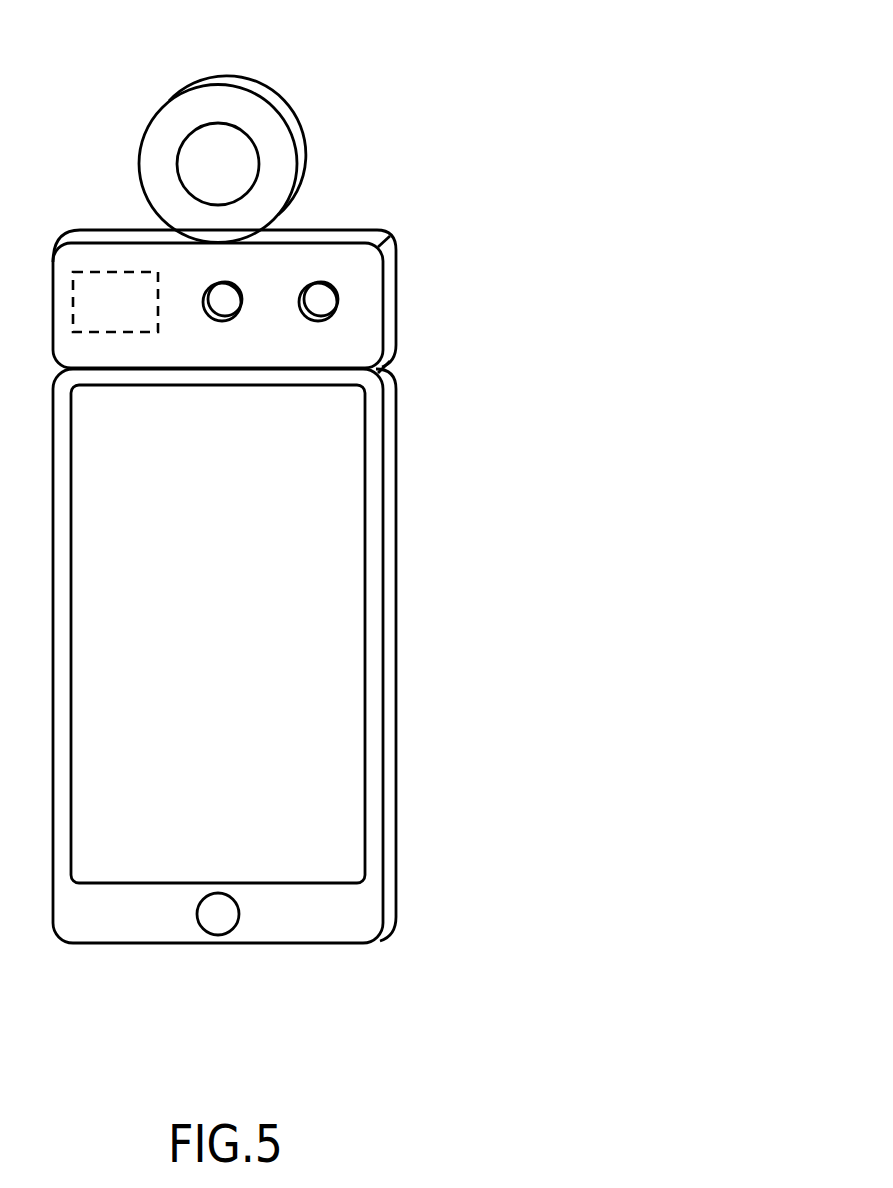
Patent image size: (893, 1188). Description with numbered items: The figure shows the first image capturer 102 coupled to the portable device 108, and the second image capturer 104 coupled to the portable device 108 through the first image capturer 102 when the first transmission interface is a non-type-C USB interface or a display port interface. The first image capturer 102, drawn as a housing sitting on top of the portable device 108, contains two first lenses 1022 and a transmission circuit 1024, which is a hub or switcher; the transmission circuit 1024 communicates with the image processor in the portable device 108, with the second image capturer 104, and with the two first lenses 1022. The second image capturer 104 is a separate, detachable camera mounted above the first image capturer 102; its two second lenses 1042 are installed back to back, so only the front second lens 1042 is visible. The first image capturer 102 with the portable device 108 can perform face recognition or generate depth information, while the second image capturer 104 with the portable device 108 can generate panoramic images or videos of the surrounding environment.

The first image capturer 102 is at (327, 242).
The first lenses 1022 is at (337, 299).
The transmission circuit 1024 is at (98, 272).
The second image capturer 104 is at (275, 92).
The second lens 1042 is at (193, 130).
The portable device 108 is at (383, 592).